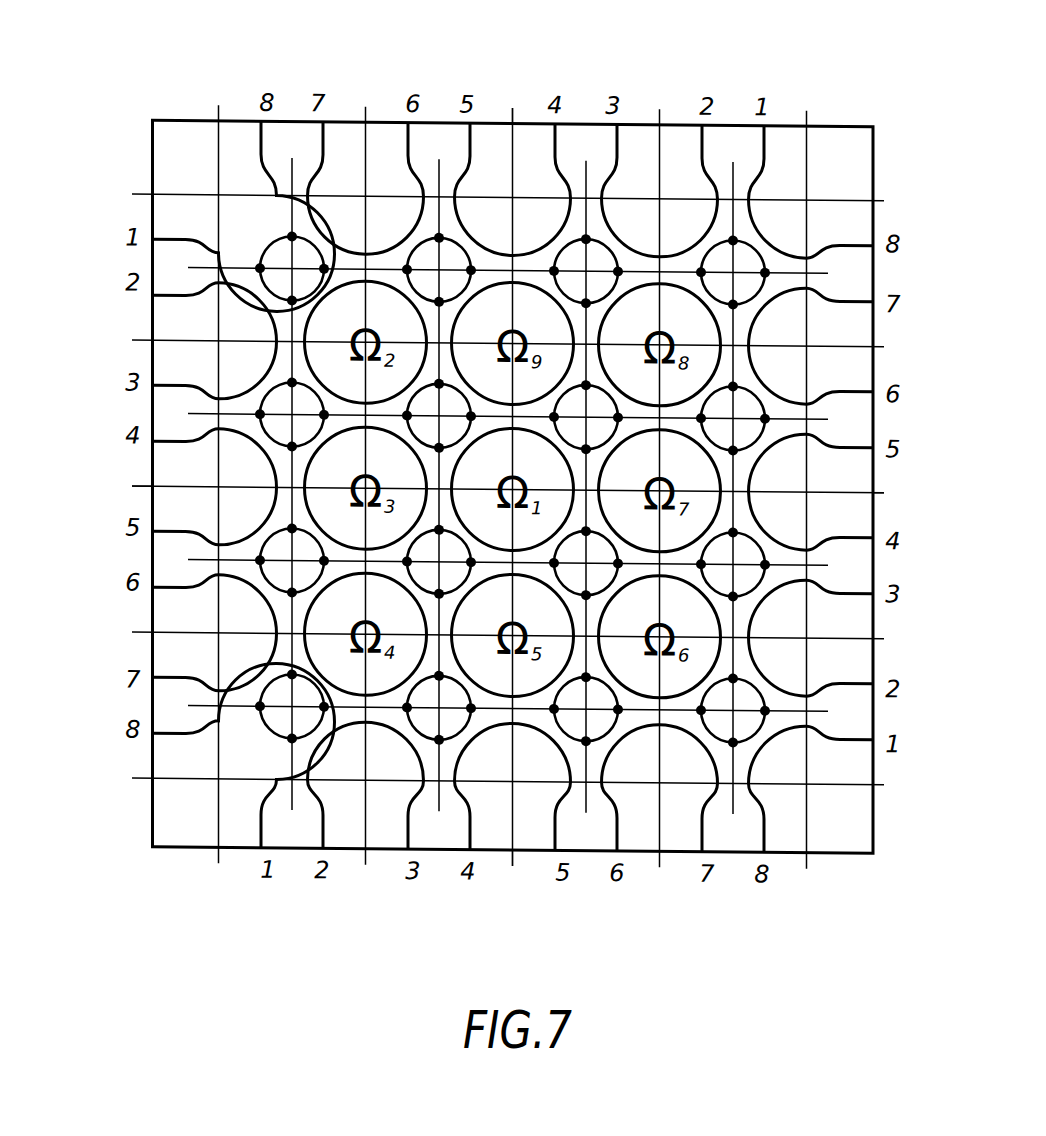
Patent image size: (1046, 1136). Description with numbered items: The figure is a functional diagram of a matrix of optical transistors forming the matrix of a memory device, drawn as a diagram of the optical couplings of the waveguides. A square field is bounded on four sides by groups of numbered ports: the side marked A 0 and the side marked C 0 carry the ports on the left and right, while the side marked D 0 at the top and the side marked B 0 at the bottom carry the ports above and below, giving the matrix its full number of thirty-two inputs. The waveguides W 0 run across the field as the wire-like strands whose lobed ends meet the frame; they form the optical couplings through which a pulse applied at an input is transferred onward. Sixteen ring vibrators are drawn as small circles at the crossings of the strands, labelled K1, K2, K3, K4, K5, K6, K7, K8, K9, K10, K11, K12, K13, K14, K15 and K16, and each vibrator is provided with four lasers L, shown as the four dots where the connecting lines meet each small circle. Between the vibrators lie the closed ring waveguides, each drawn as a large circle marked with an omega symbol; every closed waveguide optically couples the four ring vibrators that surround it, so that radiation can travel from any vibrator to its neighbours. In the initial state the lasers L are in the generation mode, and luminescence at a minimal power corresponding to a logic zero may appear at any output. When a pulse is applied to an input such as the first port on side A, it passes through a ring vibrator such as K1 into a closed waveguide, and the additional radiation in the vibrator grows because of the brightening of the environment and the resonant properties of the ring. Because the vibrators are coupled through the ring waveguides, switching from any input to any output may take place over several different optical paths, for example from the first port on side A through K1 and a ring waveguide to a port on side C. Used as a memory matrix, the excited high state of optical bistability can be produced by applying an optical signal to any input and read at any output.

The waveguide W is at (263, 142).
The lasers L is at (292, 302).
The ring vibrator K1 is at (439, 416).
The ring vibrator K2 is at (439, 562).
The ring vibrator K3 is at (586, 563).
The ring vibrator K4 is at (586, 417).
The ring vibrator K5 is at (292, 268).
The ring vibrator K6 is at (292, 414).
The ring vibrator K7 is at (292, 560).
The ring vibrator K8 is at (292, 706).
The ring vibrator K9 is at (439, 708).
The ring vibrator K10 is at (586, 709).
The ring vibrator K11 is at (733, 710).
The ring vibrator K12 is at (733, 564).
The ring vibrator K13 is at (733, 418).
The ring vibrator K14 is at (733, 272).
The ring vibrator K15 is at (586, 271).
The ring vibrator K16 is at (439, 270).
The input side A is at (126, 483).
The side B is at (509, 891).
The output side C is at (894, 493).
The side D is at (510, 96).